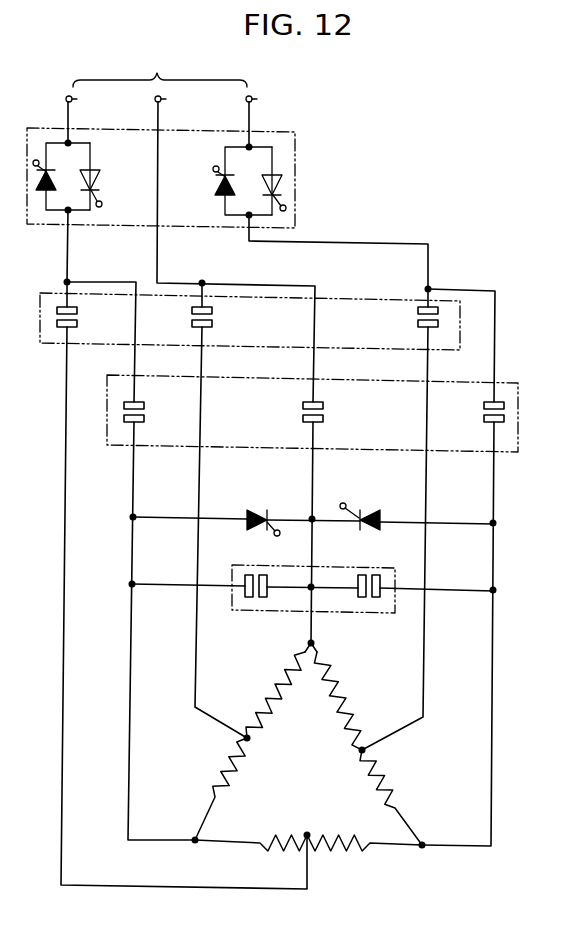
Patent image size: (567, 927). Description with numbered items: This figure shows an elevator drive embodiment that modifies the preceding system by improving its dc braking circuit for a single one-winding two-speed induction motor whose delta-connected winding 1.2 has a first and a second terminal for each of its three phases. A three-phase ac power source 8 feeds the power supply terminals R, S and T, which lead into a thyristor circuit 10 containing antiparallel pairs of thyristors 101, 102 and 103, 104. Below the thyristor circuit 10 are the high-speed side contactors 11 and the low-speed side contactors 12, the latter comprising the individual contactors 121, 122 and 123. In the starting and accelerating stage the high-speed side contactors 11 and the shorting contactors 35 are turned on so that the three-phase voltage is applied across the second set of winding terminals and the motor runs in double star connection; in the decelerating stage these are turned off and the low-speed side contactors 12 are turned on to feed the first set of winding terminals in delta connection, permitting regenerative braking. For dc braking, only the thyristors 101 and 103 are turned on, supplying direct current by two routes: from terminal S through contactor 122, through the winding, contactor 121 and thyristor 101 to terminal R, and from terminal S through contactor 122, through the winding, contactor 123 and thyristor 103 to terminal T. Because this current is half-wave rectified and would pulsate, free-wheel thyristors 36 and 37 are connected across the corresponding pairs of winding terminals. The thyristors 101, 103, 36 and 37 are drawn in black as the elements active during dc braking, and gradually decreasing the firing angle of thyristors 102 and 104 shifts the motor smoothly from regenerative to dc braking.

The three-phase ac power source 8 is at (169, 79).
The thyristor circuit 10 is at (297, 140).
The thyristor 101 is at (57, 179).
The thyristor 102 is at (100, 184).
The thyristor 103 is at (212, 189).
The thyristor 104 is at (258, 185).
The high-speed side contactors 11 is at (397, 298).
The low-speed side contactors 12 is at (405, 383).
The contactor 121 is at (145, 413).
The contactor 122 is at (324, 417).
The contactor 123 is at (484, 420).
The free-wheel thyristor 36 is at (260, 509).
The free-wheel thyristor 37 is at (366, 510).
The shorting contactors 35 is at (338, 612).
The motor stator windings 1.2 is at (312, 758).